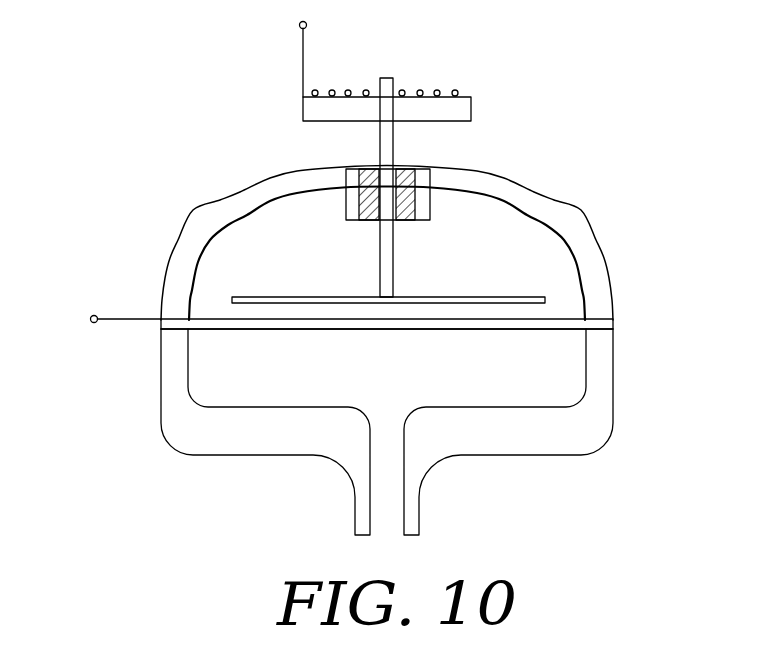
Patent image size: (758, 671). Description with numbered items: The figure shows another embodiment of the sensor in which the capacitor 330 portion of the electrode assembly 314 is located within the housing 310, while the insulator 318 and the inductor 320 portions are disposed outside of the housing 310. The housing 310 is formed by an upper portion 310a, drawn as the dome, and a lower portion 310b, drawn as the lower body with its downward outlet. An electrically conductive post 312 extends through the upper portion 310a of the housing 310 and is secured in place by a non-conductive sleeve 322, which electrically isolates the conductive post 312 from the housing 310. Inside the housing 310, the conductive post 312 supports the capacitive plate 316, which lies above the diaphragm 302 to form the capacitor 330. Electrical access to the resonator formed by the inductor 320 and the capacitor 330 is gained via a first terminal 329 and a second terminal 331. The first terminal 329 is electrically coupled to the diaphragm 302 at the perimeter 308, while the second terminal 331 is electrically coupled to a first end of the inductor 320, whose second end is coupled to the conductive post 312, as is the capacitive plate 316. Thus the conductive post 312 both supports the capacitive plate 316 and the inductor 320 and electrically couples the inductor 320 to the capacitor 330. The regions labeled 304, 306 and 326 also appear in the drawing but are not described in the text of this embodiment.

The diaphragm 302 is at (463, 330).
The lower chamber region 304 is at (550, 372).
The upper chamber region 306 is at (533, 267).
The perimeter 308 is at (167, 325).
The housing 310 is at (168, 223).
The upper portion 310a is at (244, 199).
The lower portion 310b is at (273, 432).
The electrically conductive post 312 is at (386, 145).
The electrode assembly 314 is at (405, 255).
The capacitive plate 316 is at (262, 297).
The insulator 318 is at (457, 107).
The inductor 320 is at (458, 90).
The non-conductive sleeve 322 is at (372, 168).
The gap between plate and wall 326 is at (247, 312).
The first terminal 329 is at (106, 321).
The capacitor 330 is at (544, 312).
The second terminal 331 is at (305, 43).